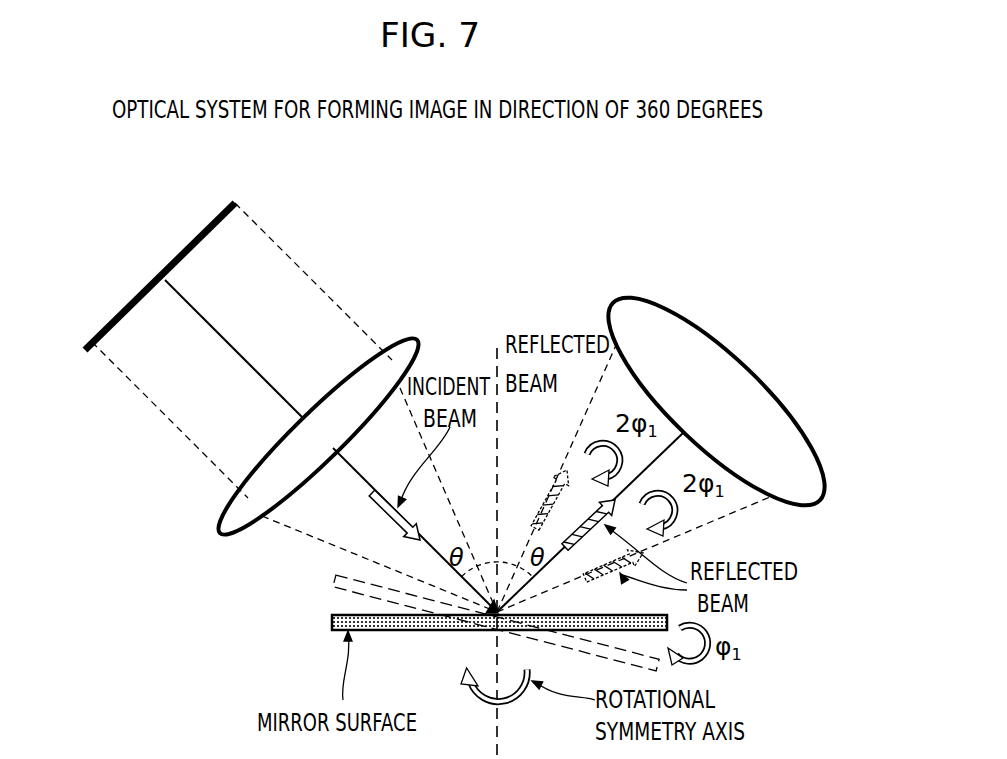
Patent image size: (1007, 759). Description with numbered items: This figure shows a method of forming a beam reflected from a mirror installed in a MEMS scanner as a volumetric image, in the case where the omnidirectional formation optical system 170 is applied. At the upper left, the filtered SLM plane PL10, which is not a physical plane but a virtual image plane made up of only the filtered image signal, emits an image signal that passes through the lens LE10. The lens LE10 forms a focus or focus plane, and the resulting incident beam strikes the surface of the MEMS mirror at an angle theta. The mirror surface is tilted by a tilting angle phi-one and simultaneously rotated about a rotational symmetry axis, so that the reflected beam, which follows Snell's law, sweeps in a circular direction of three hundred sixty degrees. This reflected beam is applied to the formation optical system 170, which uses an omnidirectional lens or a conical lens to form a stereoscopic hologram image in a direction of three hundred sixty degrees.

The 360-degree formation optical system 170 is at (618, 296).
The filtered SLM plane PL10 is at (83, 357).
The lens LE10 is at (235, 537).